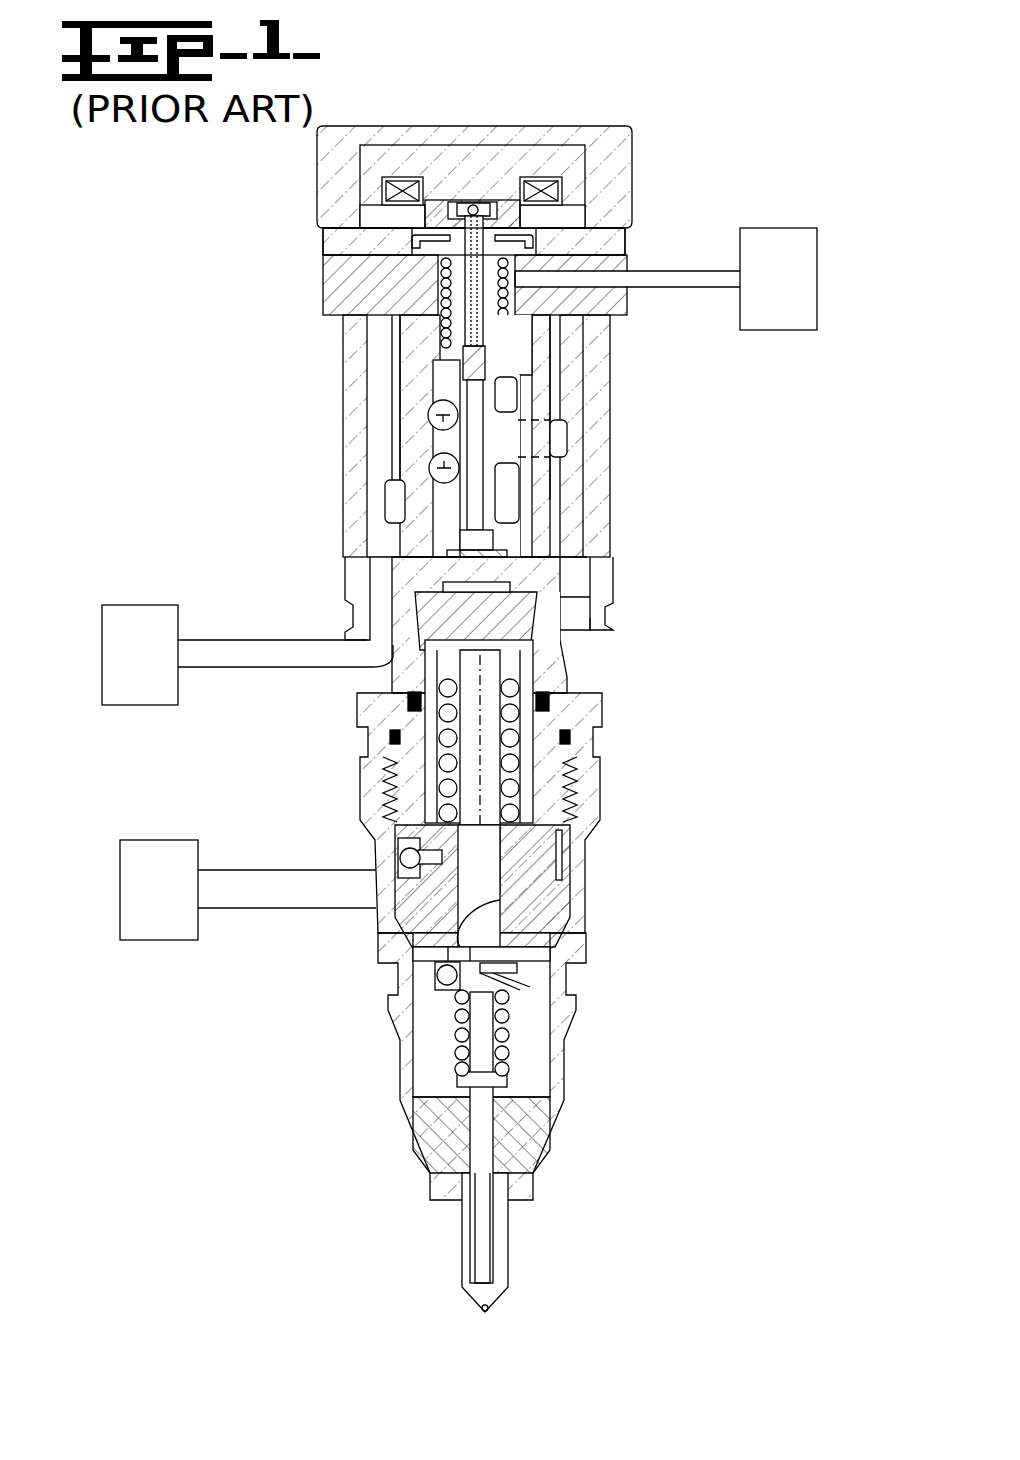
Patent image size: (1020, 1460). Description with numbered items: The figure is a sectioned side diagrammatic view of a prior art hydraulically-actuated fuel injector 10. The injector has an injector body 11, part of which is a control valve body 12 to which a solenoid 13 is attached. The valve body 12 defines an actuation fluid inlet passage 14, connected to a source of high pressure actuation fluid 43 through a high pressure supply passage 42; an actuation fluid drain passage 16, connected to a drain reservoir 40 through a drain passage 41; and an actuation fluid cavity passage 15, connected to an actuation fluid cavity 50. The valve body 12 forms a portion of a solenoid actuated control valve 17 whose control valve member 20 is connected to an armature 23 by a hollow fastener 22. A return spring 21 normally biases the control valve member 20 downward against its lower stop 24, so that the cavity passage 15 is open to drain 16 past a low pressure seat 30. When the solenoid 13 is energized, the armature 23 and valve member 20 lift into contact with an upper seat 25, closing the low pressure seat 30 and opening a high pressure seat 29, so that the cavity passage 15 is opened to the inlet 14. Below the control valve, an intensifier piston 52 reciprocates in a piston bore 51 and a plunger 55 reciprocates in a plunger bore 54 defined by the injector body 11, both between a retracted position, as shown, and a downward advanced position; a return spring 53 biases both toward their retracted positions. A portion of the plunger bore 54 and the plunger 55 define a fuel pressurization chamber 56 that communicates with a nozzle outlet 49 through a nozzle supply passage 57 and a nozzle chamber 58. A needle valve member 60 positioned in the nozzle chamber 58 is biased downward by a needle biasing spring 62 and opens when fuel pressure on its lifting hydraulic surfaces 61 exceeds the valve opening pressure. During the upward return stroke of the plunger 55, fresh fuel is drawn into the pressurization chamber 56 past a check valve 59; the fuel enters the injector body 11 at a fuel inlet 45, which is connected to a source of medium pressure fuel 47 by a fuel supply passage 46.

The hydraulically-actuated fuel injector 10 is at (728, 880).
The injector body 11 is at (612, 465).
The control valve body 12 is at (336, 370).
The solenoid 13 is at (552, 126).
The actuation fluid inlet passage 14 is at (372, 608).
The actuation fluid cavity passage 15 is at (607, 437).
The actuation fluid drain passage 16 is at (612, 277).
The solenoid actuated control valve 17 is at (645, 348).
The control valve member 20 is at (433, 370).
The return spring 21 is at (441, 285).
The hollow fastener 22 is at (450, 226).
The armature 23 is at (437, 200).
The lower stop 24 is at (512, 532).
The upper seat 25 is at (479, 200).
The high pressure seat 29 is at (437, 460).
The low pressure seat 30 is at (434, 403).
The drain reservoir 40 is at (785, 228).
The drain passage 41 is at (683, 288).
The high pressure supply passage 42 is at (243, 667).
The source of high pressure actuation fluid 43 is at (137, 605).
The fuel inlet 45 is at (377, 877).
The fuel supply passage 46 is at (235, 908).
The source of medium pressure fuel 47 is at (140, 840).
The nozzle outlet 49 is at (490, 1315).
The actuation fluid cavity 50 is at (560, 608).
The piston bore 51 is at (416, 678).
The intensifier piston 52 is at (535, 660).
The return spring 53 is at (520, 722).
The plunger bore 54 is at (484, 930).
The plunger 55 is at (512, 862).
The fuel pressurization chamber 56 is at (412, 930).
The nozzle supply passage 57 is at (536, 1060).
The nozzle chamber 58 is at (458, 1175).
The check valve 59 is at (438, 978).
The needle valve member 60 is at (463, 1217).
The lifting hydraulic surfaces 61 is at (495, 1210).
The needle biasing spring 62 is at (458, 1062).